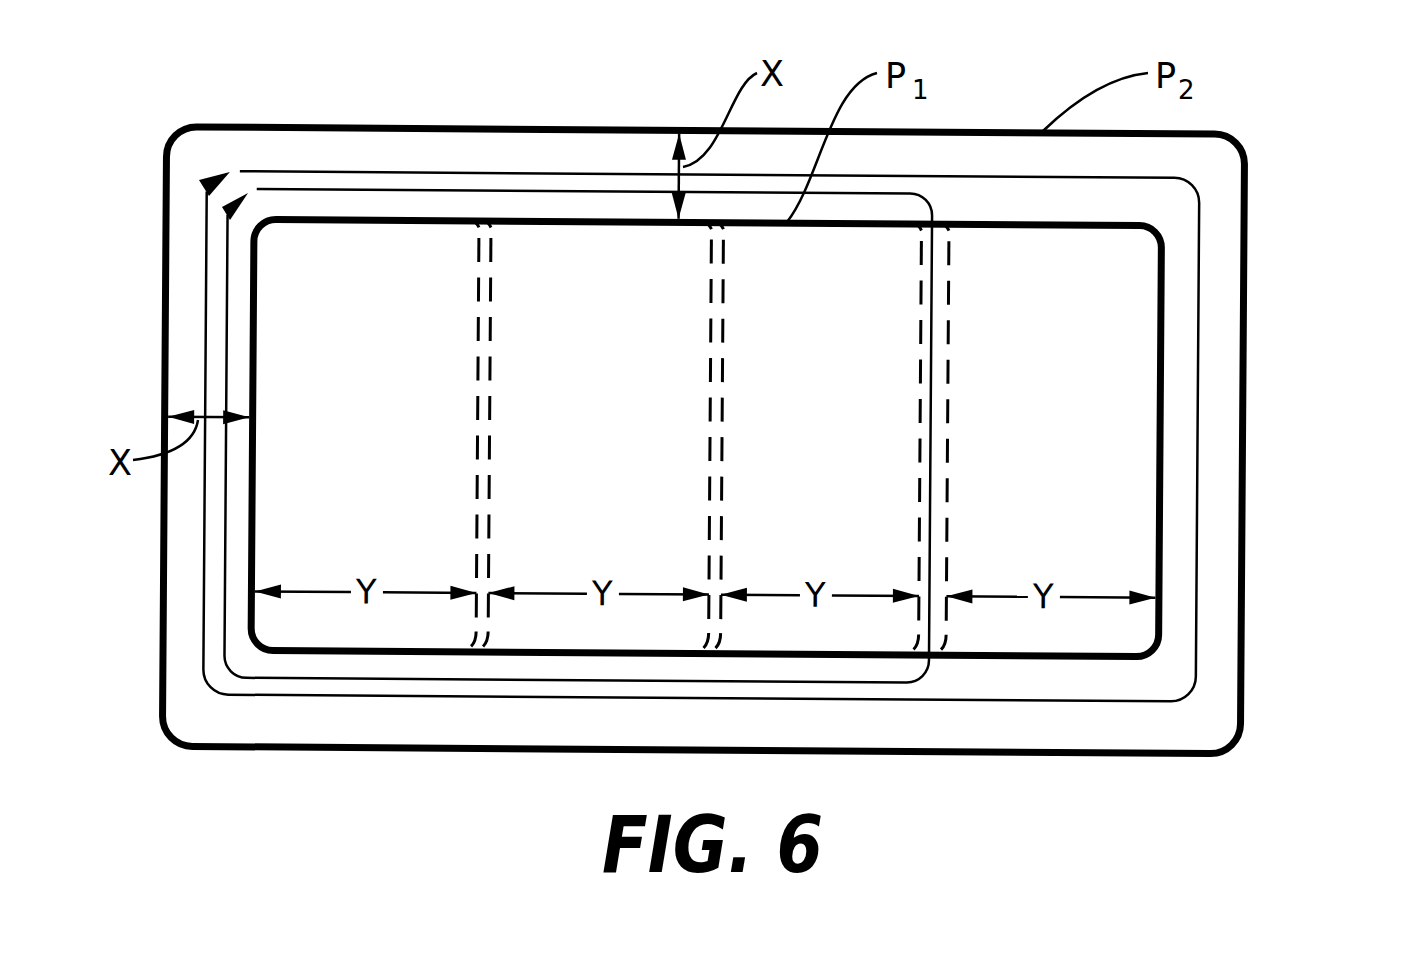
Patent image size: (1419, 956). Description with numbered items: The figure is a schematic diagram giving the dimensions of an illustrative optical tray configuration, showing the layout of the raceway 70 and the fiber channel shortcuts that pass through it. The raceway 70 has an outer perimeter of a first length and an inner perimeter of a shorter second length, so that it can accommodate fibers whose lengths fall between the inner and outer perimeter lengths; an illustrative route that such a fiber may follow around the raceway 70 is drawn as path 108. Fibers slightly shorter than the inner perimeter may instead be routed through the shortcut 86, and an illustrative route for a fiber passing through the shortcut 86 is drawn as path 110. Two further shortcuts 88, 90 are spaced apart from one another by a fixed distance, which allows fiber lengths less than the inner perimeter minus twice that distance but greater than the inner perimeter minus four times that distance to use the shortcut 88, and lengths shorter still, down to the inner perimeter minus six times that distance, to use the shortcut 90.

The raceway 70 is at (1222, 272).
The shortcut 86 is at (950, 368).
The shortcut 88 is at (716, 338).
The shortcut 90 is at (492, 326).
The path 108 is at (470, 172).
The path 110 is at (930, 408).